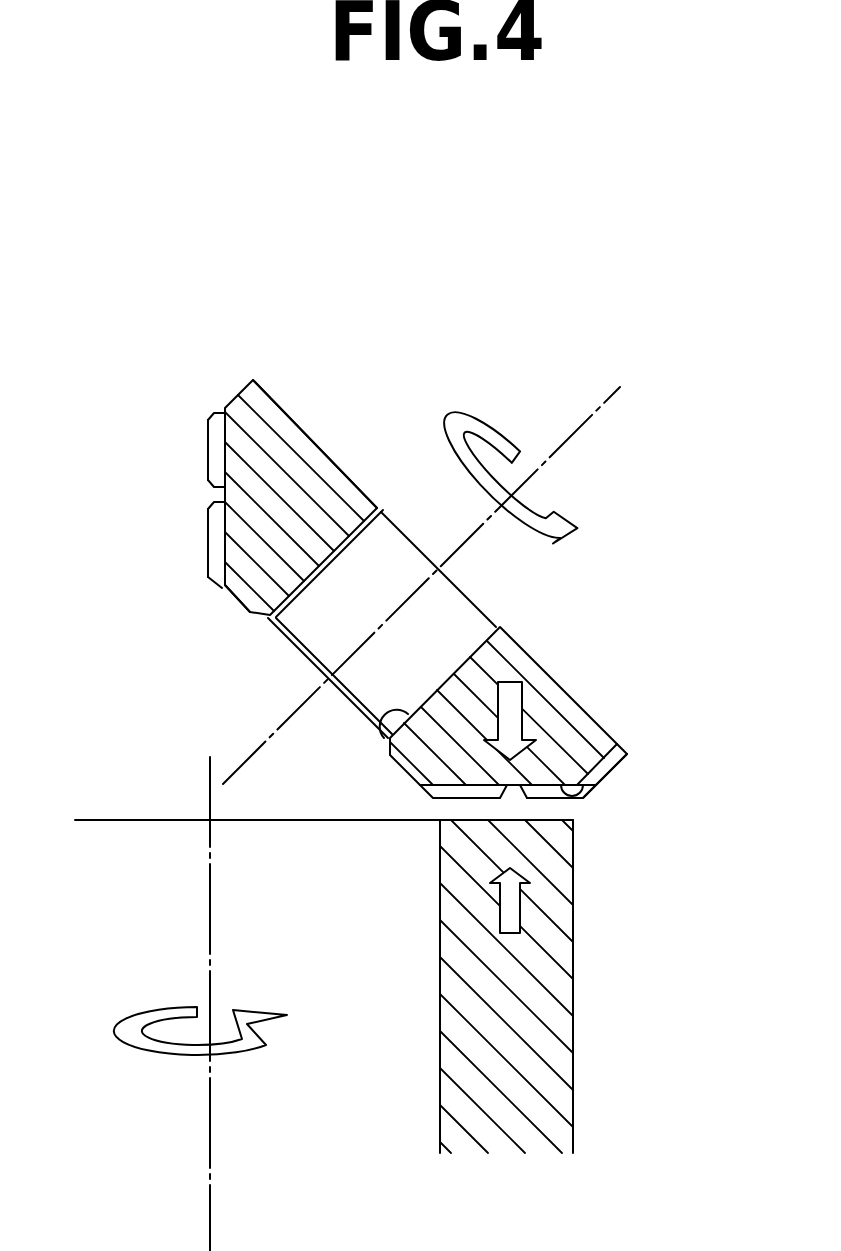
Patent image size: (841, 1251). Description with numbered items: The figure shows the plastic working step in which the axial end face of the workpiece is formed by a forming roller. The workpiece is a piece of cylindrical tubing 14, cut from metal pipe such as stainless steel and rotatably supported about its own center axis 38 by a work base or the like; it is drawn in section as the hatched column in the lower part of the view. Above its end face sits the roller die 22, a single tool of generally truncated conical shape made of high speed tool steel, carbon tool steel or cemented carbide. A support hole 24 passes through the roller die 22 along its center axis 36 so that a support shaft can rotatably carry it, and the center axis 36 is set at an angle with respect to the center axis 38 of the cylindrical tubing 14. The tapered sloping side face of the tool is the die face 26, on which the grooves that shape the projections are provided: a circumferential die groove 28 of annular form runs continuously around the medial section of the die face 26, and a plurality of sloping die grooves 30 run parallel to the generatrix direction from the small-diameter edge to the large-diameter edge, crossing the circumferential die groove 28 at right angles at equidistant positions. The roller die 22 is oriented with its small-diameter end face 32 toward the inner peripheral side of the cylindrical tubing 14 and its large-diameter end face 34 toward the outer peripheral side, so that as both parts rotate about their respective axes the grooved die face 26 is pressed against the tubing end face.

The cylindrical tubing 14 is at (592, 1026).
The roller die 22 is at (568, 638).
The support hole 24 is at (372, 733).
The die face 26 is at (200, 547).
The circumferential die groove 28 is at (217, 500).
The sloping die grooves 30 is at (208, 420).
The small-diameter end face 32 is at (226, 605).
The large-diameter end face 34 is at (313, 438).
The center axis of the roller die 36 is at (207, 790).
The center axis of the cylindrical tubing 38 is at (582, 435).